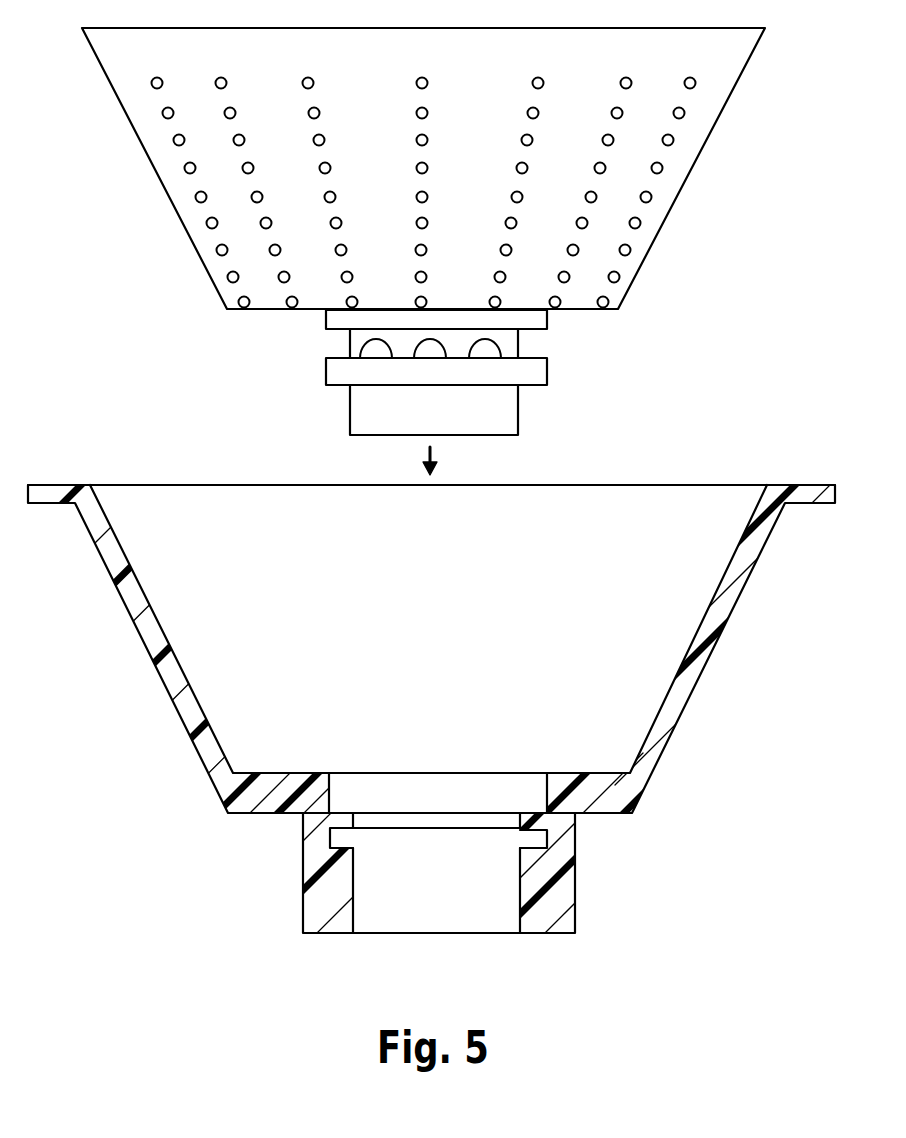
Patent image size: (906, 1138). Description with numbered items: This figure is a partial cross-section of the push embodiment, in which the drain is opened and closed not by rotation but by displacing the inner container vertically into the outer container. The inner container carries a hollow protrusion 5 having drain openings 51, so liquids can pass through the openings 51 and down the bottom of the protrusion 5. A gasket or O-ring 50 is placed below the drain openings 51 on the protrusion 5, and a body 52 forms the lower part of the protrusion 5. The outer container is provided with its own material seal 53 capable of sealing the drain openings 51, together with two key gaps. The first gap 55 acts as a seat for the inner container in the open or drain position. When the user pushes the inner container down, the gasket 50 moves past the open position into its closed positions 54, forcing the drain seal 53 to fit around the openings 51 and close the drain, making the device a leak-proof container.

The protrusion 5 is at (423, 250).
The gasket 50 is at (314, 372).
The drain openings 51 is at (501, 343).
The cylindrical body 52 is at (340, 420).
The material seal 53 is at (556, 823).
The closed positions 54 is at (309, 859).
The first gap 55 is at (324, 807).